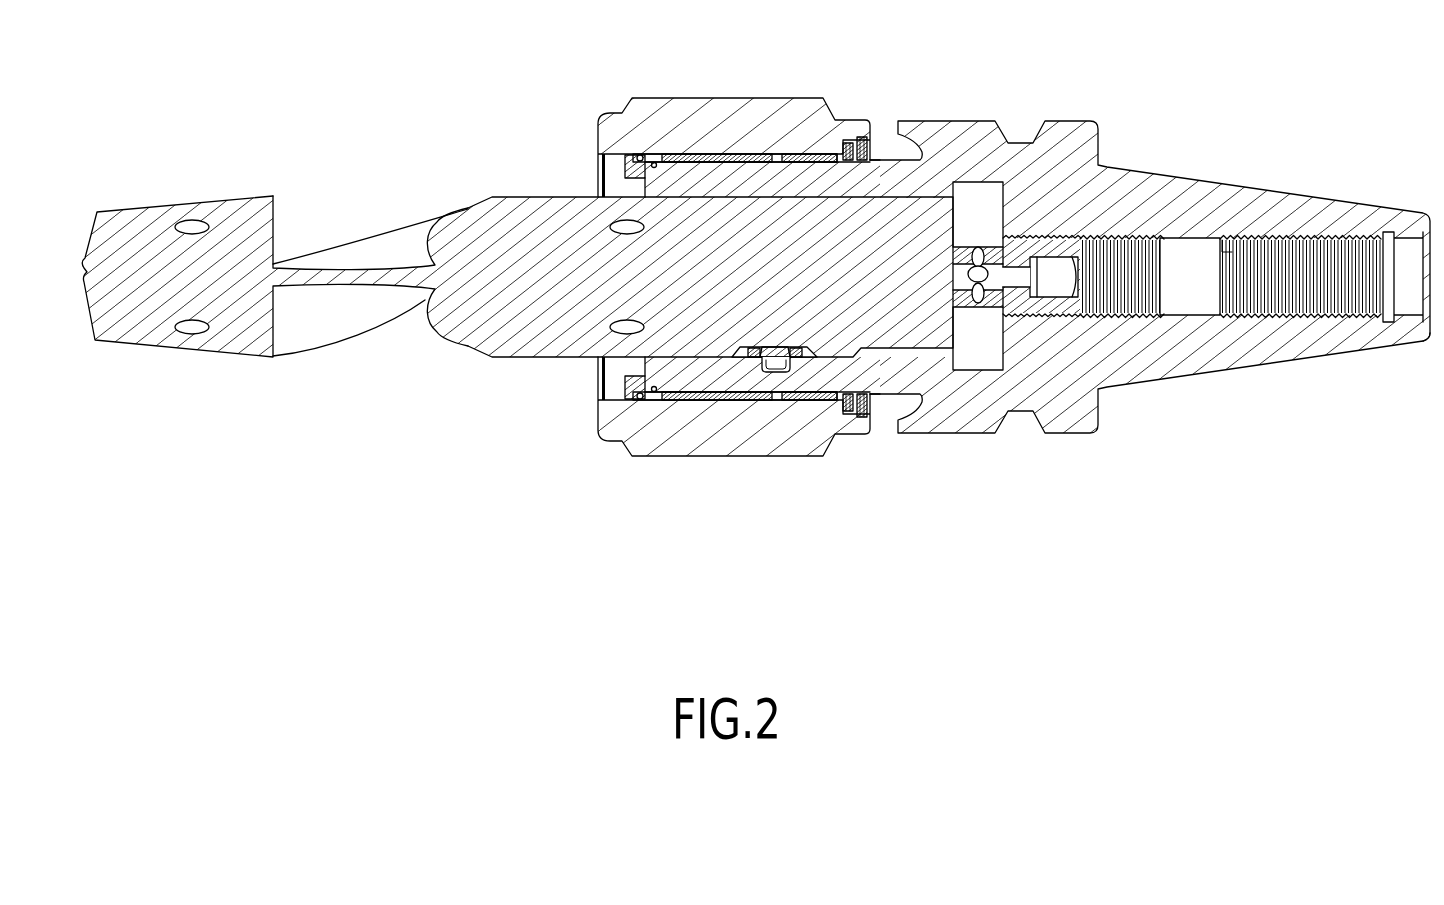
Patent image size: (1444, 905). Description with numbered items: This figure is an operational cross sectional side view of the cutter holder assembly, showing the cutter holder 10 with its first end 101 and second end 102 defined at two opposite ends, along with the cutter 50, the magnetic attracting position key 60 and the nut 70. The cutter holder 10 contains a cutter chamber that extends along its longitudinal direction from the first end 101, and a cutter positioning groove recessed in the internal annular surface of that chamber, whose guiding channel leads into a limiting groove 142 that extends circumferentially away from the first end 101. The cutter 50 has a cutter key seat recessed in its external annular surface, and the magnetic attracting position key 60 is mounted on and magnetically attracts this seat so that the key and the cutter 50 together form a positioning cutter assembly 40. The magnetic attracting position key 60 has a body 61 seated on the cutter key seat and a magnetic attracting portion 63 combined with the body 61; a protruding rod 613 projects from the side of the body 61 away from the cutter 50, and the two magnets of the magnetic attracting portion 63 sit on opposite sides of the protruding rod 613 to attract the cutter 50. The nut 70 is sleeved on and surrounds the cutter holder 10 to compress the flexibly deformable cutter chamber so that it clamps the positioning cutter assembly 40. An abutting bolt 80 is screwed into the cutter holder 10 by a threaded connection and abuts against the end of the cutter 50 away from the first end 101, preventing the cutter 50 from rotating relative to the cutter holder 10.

The cutter holder 10 is at (1007, 80).
The positioning cutter assembly 40 is at (470, 140).
The cutter 50 is at (496, 357).
The magnetic attracting position key 60 is at (780, 315).
The body 61 is at (816, 338).
The magnetic attracting portion 63 is at (745, 336).
The nut 70 is at (735, 110).
The abutting bolt 80 is at (1050, 247).
The first end 101 is at (597, 404).
The second end 102 is at (1443, 335).
The limiting groove 142 is at (788, 372).
The protruding rod 613 is at (770, 364).